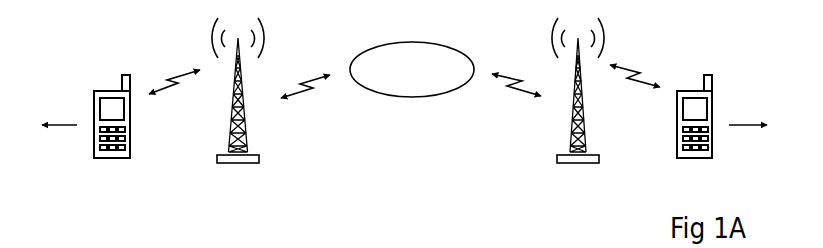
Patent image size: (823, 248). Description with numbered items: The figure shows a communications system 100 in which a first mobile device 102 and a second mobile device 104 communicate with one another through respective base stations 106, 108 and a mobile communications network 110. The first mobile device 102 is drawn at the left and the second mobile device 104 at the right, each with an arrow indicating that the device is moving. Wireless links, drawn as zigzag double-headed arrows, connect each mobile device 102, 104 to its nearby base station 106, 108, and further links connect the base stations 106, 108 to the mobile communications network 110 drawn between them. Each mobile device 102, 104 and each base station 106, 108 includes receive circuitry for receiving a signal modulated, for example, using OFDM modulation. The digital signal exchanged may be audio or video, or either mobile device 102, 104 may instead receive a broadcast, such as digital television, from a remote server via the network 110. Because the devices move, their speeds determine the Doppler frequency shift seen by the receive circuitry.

The communications system 100 is at (708, 37).
The first mobile device 102 is at (96, 145).
The second mobile device 104 is at (712, 145).
The base station 106 is at (240, 163).
The base station 108 is at (572, 163).
The mobile communications network 110 is at (413, 94).